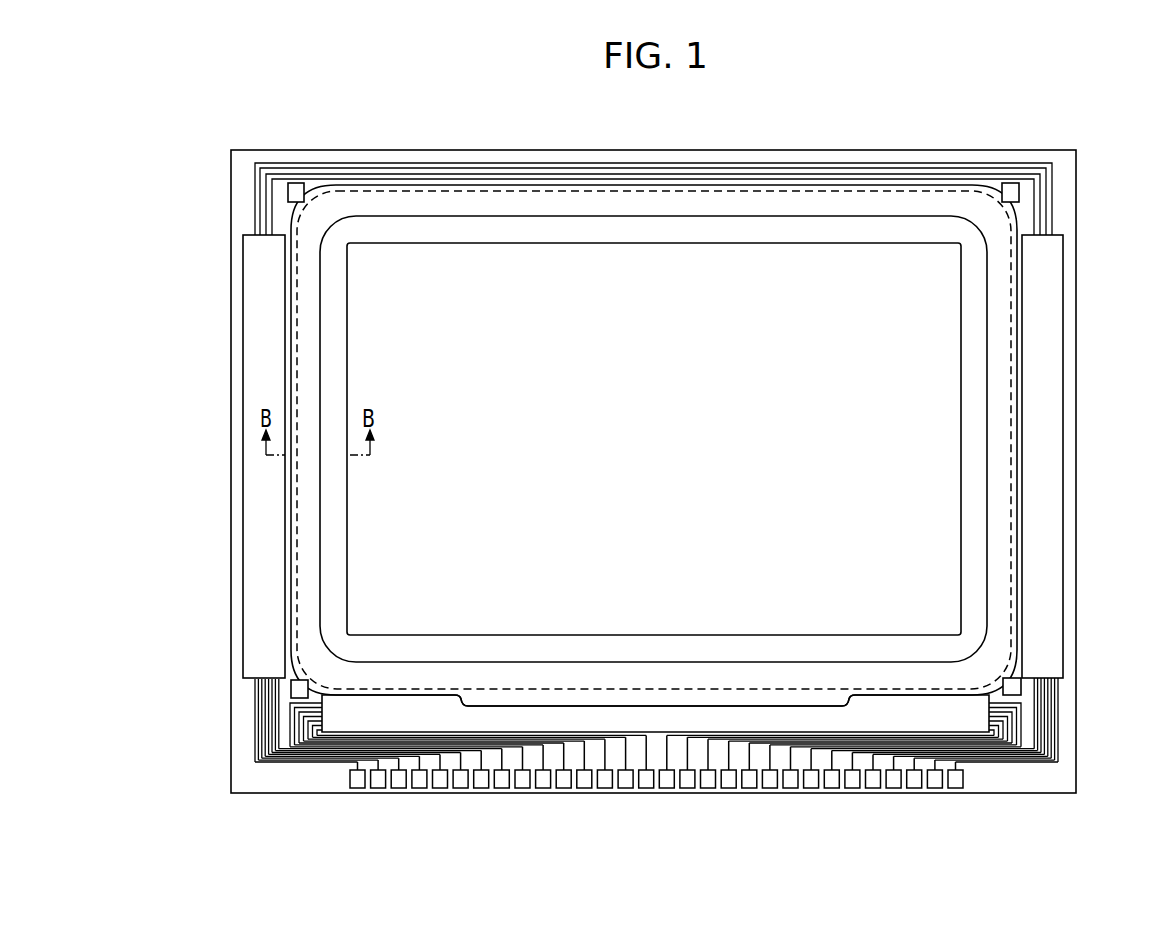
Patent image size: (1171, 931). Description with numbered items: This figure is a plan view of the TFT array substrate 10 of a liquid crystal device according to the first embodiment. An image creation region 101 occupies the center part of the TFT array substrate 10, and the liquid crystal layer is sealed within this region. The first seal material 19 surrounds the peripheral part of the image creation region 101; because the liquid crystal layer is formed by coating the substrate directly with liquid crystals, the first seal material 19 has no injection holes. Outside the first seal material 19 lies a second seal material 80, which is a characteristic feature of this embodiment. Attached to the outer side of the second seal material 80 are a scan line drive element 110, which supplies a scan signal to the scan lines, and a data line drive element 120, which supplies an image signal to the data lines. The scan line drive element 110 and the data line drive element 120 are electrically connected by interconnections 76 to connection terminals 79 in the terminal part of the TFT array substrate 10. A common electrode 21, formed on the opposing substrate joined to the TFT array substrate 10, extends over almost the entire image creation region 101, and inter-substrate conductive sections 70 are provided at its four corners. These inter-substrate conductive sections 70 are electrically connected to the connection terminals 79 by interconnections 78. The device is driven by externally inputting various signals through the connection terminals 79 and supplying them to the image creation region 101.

The TFT array substrate 10 is at (337, 100).
The first seal material 19 is at (776, 232).
The common electrode 21 is at (428, 190).
The inter-substrate conductive sections 70 is at (296, 191).
The interconnections 76 is at (265, 745).
The interconnections 78 is at (284, 742).
The connection terminals 79 is at (606, 790).
The second seal material 80 is at (655, 203).
The image creation region 101 is at (672, 453).
The scan line drive element 110 is at (262, 340).
The data line drive element 120 is at (346, 713).